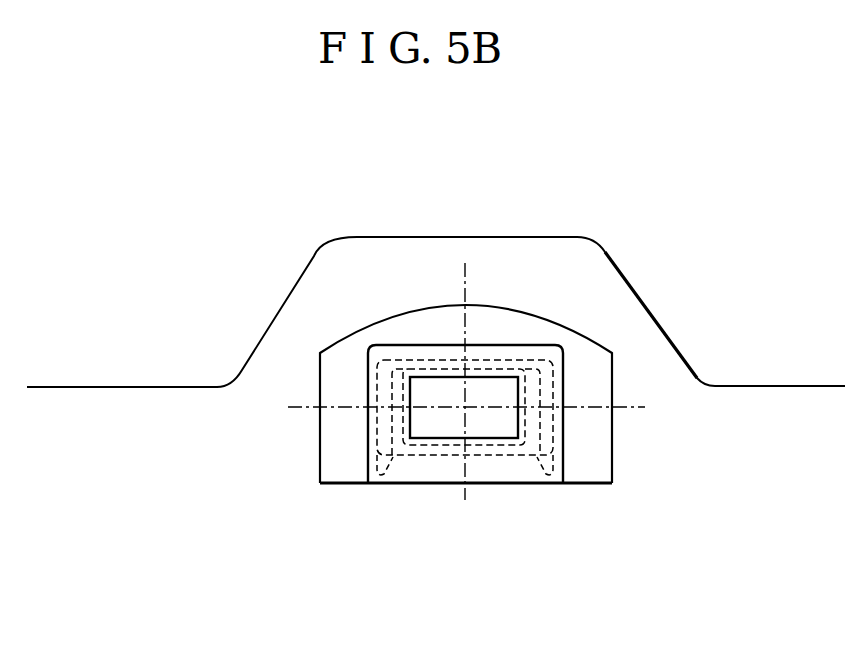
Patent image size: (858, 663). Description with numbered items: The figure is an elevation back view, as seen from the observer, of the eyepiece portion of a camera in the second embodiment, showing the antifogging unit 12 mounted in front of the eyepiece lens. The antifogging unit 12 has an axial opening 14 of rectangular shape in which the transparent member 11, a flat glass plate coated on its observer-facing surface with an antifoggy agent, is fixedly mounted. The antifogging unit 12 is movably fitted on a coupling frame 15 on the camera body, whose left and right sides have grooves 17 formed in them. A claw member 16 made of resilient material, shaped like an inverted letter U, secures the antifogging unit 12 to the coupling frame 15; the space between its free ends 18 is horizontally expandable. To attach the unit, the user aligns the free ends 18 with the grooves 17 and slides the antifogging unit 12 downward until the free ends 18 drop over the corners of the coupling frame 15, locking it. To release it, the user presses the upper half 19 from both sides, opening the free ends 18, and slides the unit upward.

The transparent member 11 is at (503, 440).
The antifogging unit 12 is at (515, 323).
The axial opening 14 is at (450, 440).
The coupling frame 15 is at (402, 368).
The claw member 16 is at (550, 434).
The grooves 17 is at (392, 393).
The free ends 18 is at (542, 473).
The upper half 19 is at (318, 388).